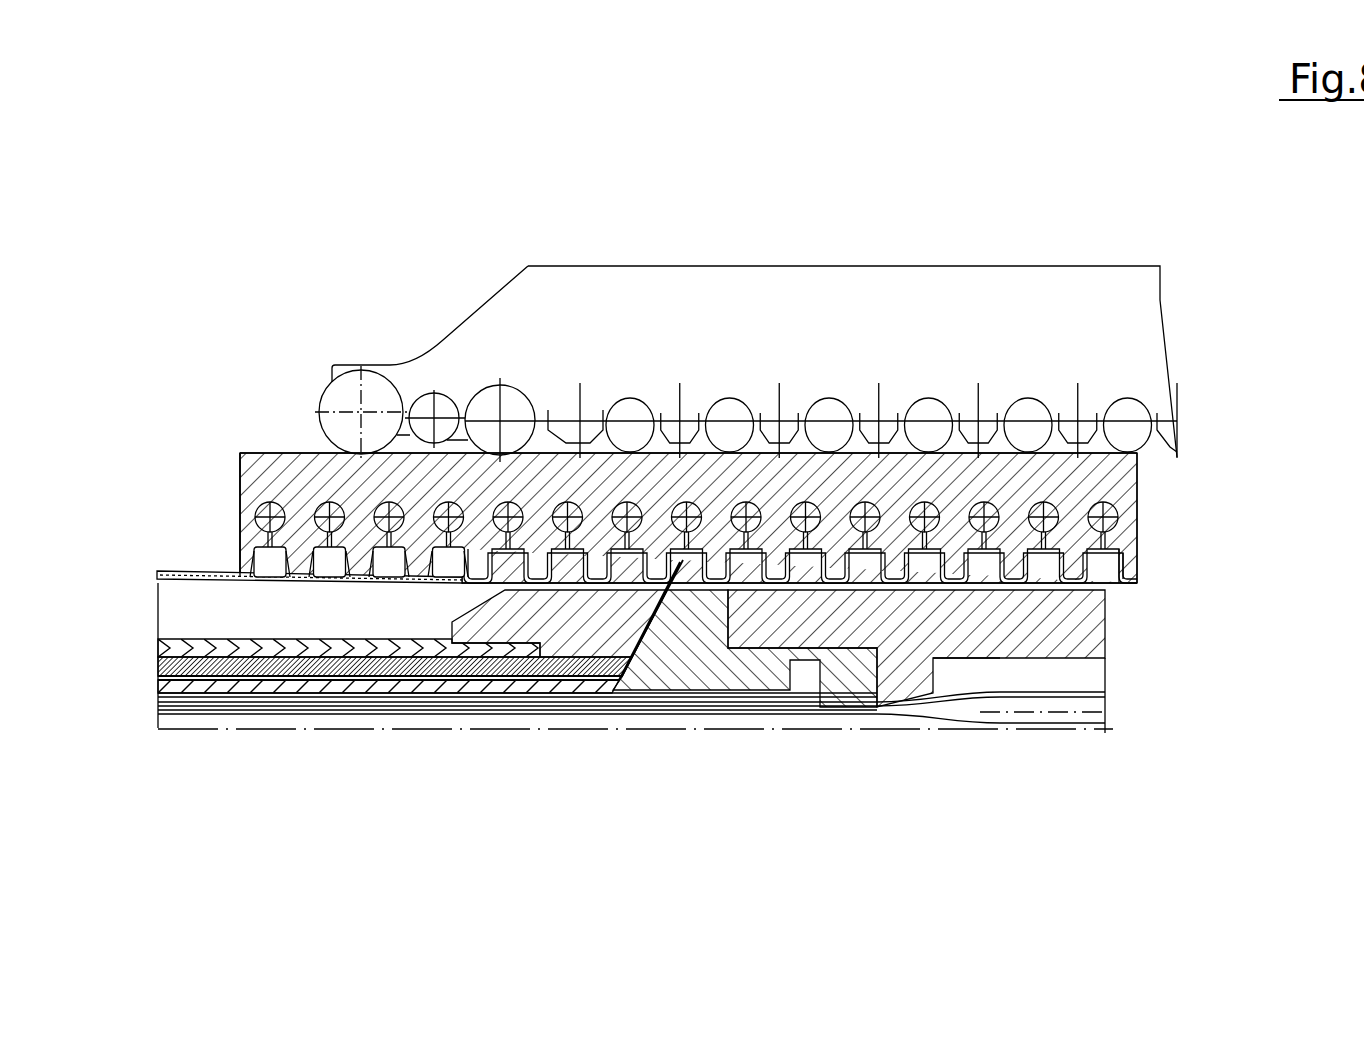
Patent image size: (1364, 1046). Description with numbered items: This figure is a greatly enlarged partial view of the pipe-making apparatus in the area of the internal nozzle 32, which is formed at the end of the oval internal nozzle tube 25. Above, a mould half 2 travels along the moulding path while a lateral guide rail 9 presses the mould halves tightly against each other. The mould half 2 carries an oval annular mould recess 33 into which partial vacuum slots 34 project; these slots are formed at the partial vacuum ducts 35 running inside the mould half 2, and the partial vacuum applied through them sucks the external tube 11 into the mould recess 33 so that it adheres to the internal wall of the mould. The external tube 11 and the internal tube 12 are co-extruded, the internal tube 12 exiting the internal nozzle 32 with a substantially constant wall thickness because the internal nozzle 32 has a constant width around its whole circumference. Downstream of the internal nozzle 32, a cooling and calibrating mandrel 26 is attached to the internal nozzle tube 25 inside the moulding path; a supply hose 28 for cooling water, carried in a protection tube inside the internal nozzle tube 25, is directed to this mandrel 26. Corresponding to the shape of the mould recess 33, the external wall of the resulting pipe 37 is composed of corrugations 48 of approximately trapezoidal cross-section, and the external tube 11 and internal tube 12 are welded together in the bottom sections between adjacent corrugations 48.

The mould half 2 is at (302, 467).
The lateral guide rail 9 is at (810, 335).
The external tube 11 is at (157, 578).
The internal tube 12 is at (757, 583).
The internal nozzle tube 25 is at (157, 646).
The cooling and calibrating mandrel 26 is at (1097, 637).
The supply hose 28 is at (1092, 720).
The internal nozzle 32 is at (707, 587).
The mould recess 33 is at (255, 452).
The partial vacuum slot 34 is at (257, 537).
The partial vacuum duct 35 is at (240, 483).
The pipe 37 is at (1118, 592).
The corrugation 48 is at (1103, 562).